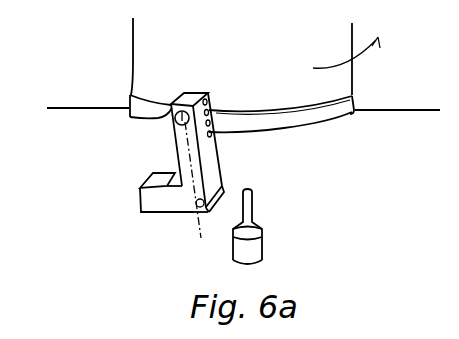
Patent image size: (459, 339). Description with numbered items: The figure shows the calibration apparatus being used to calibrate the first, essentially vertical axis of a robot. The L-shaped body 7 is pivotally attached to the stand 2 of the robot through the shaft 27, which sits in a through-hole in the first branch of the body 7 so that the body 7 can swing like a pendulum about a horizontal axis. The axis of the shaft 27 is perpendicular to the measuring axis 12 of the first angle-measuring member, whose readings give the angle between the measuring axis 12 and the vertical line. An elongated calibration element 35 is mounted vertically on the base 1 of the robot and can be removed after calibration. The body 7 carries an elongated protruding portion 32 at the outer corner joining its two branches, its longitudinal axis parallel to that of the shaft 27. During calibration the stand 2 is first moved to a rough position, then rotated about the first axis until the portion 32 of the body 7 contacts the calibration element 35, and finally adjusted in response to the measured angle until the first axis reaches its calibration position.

The base 1 is at (397, 122).
The stand 2 is at (148, 41).
The body 7 is at (140, 188).
The measuring axis 12 is at (187, 143).
The shaft 27 is at (172, 107).
The elongated protruding portion 32 is at (218, 188).
The calibration element 35 is at (257, 245).